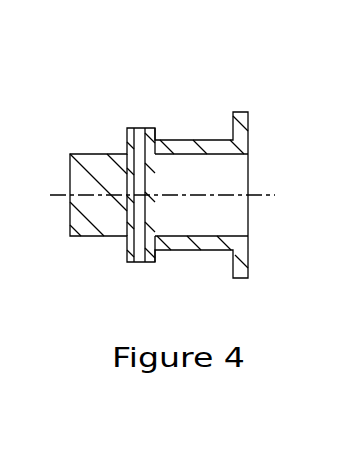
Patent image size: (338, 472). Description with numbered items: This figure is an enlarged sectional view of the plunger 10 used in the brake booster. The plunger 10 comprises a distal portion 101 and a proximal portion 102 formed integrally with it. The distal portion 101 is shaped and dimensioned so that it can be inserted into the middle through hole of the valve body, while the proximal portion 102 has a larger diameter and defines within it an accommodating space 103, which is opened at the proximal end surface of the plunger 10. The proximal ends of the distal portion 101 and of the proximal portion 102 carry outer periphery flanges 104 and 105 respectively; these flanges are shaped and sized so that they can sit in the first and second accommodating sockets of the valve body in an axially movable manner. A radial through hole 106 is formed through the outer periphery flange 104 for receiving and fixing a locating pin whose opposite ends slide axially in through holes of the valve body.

The plunger 10 is at (166, 76).
The distal portion 101 is at (93, 154).
The proximal portion 102 is at (207, 140).
The accommodating space 103 is at (238, 170).
The outer periphery flange 104 is at (155, 262).
The outer periphery flange 105 is at (248, 270).
The radial through hole 106 is at (140, 262).